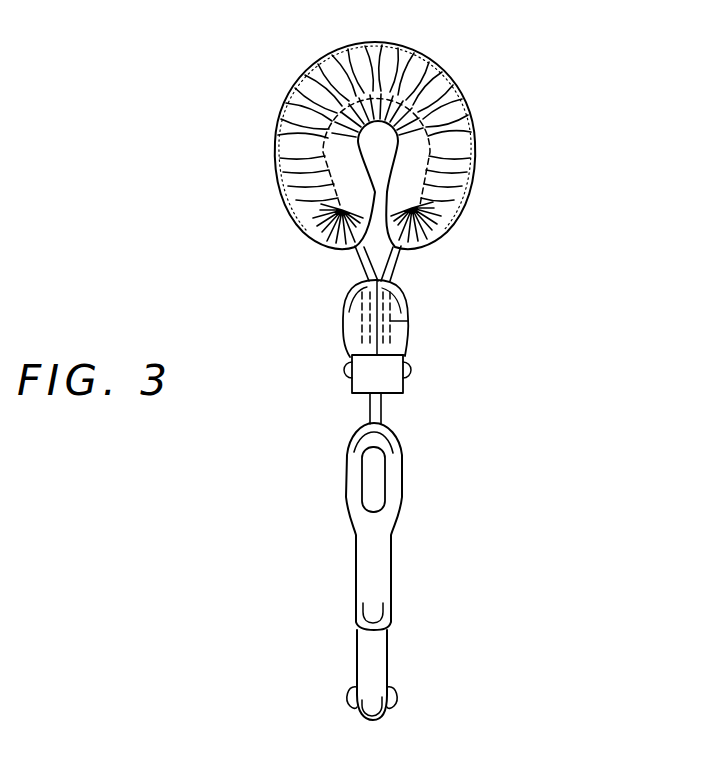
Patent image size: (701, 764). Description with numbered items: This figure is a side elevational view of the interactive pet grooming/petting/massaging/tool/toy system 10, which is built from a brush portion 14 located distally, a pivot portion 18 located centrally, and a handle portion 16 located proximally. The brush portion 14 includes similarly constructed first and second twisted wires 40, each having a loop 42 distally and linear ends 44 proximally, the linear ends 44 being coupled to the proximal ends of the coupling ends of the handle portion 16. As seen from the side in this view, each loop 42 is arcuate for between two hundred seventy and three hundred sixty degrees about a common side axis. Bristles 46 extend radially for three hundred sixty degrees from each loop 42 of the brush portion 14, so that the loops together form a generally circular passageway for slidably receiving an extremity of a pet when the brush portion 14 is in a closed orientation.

The interactive pet grooming/petting/massaging/tool/toy system 10 is at (566, 336).
The brush portion 14 is at (413, 126).
The handle portion 16 is at (388, 660).
The pivot portion 18 is at (412, 374).
The twisted wires 40 is at (399, 262).
The loop 42 is at (313, 67).
The linear ends 44 is at (408, 322).
The bristles 46 is at (477, 122).